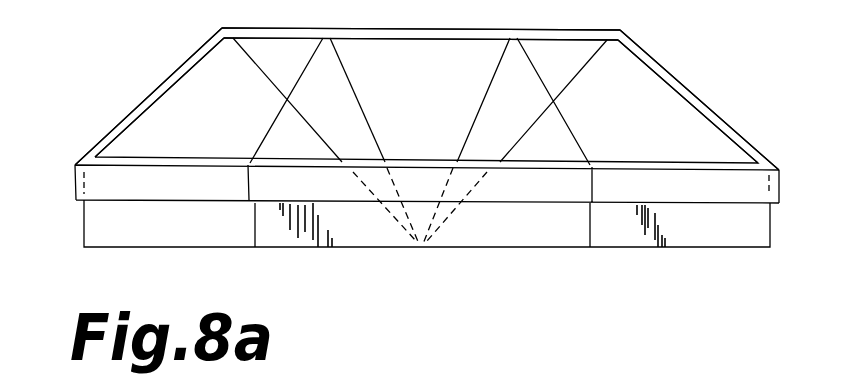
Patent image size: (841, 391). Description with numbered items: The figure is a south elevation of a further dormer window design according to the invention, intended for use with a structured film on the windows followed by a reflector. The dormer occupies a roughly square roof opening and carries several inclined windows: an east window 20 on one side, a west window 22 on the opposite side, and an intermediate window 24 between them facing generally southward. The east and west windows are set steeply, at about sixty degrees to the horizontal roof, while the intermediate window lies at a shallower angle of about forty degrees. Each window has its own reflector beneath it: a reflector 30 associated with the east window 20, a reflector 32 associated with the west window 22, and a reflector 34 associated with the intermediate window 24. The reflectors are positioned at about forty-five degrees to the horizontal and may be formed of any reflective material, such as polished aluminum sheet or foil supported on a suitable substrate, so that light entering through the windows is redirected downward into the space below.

The east window 20 is at (662, 113).
The west window 22 is at (180, 113).
The intermediate window 24 is at (477, 67).
The reflector 30 is at (602, 27).
The reflector 32 is at (245, 26).
The reflector 34 is at (400, 27).